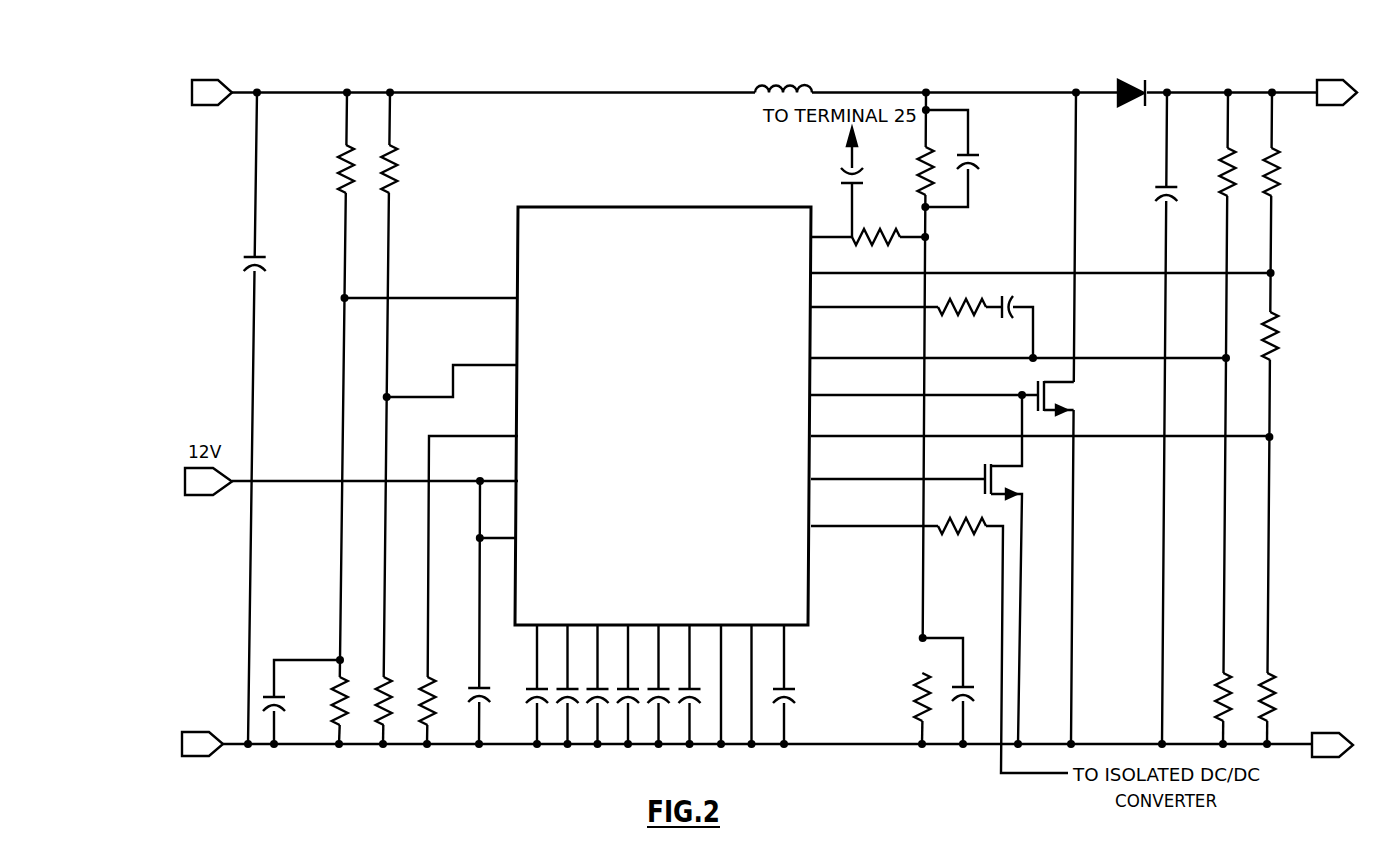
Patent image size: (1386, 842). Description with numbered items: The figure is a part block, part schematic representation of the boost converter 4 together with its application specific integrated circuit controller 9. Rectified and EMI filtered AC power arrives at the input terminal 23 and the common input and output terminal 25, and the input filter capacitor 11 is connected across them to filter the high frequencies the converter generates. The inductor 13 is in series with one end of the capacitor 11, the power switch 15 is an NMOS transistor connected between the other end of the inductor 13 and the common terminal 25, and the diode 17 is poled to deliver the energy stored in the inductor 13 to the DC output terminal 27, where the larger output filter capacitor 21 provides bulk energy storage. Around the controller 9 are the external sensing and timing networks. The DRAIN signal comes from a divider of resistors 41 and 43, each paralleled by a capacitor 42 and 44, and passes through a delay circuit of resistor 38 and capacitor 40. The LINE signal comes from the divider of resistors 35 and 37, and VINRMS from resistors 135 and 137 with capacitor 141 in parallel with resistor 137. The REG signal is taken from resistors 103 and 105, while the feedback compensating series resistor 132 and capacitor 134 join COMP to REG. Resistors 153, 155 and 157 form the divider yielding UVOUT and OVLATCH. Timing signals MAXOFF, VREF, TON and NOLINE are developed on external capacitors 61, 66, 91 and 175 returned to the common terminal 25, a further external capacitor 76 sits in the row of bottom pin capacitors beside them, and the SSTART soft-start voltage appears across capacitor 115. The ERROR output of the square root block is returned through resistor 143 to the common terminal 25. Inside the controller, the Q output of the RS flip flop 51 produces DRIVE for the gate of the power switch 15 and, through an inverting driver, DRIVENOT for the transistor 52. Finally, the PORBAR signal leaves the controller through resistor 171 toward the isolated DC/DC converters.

The boost converter 4 is at (361, 47).
The controller 9 is at (662, 207).
The input filter capacitor 11 is at (263, 256).
The inductor 13 is at (780, 83).
The power switch 15 is at (1040, 385).
The diode 17 is at (1131, 80).
The output filter capacitor 21 is at (1163, 185).
The input terminal 23 is at (258, 90).
The common input and output terminal 25 is at (232, 750).
The DC output terminal 27 is at (1291, 90).
The resistor 35 is at (396, 168).
The resistor 37 is at (387, 680).
The resistor 38 is at (856, 241).
The capacitor 40 is at (847, 183).
The resistor 41 is at (920, 178).
The capacitor 42 is at (966, 152).
The resistor 43 is at (921, 678).
The capacitor 44 is at (962, 682).
The RS flip flop 51 is at (598, 706).
The transistor 52 is at (984, 488).
The capacitor 61 is at (629, 706).
The capacitor 66 is at (659, 706).
The capacitor 76 is at (566, 706).
The capacitor 91 is at (526, 686).
The resistor 103 is at (1222, 166).
The resistor 105 is at (1218, 686).
The capacitor 115 is at (791, 706).
The feedback compensating resistor 132 is at (946, 302).
The feedback compensating capacitor 134 is at (1013, 305).
The resistor 135 is at (345, 160).
The resistor 137 is at (334, 680).
The capacitor 141 is at (283, 708).
The resistor 143 is at (433, 680).
The resistor 153 is at (1276, 165).
The resistor 155 is at (1295, 305).
The resistor 157 is at (1273, 685).
The resistor 171 is at (943, 531).
The capacitor 175 is at (690, 706).